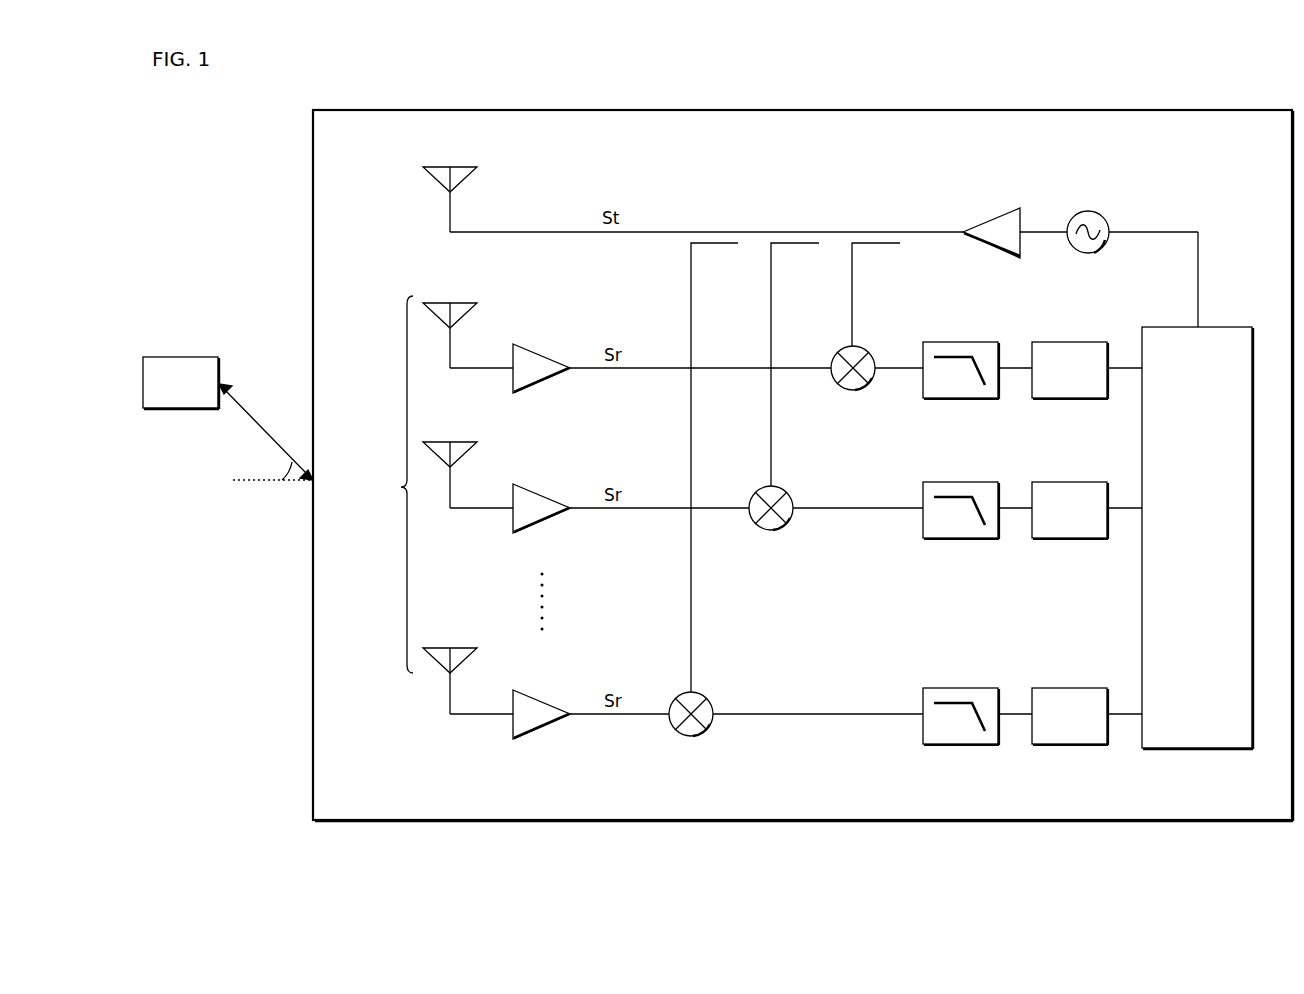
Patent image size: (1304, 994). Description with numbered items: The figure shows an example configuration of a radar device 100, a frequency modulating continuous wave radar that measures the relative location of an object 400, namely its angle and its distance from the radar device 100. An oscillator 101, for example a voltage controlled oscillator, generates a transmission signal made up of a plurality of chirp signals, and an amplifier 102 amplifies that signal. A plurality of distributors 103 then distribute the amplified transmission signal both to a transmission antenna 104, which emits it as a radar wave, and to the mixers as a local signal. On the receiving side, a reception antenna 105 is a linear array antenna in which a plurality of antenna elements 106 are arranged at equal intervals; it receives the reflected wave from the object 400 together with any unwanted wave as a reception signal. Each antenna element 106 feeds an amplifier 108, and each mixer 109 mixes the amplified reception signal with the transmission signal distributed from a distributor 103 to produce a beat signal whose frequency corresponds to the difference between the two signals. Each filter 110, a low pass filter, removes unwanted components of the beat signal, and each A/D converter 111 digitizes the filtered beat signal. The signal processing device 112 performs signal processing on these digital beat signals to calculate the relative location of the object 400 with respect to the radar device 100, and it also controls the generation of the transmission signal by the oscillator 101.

The radar device 100 is at (1140, 110).
The oscillator 101 is at (1092, 256).
The amplifier 102 is at (990, 261).
The distributor 103 is at (703, 232).
The transmission antenna 104 is at (462, 167).
The reception antenna 105 is at (382, 484).
The antenna element 106 is at (462, 303).
The amplifier 108 is at (546, 355).
The mixer 109 is at (856, 391).
The filter 110 is at (962, 399).
The A/D converter 111 is at (1072, 399).
The signal processing device 112 is at (1225, 327).
The object 400 is at (176, 357).